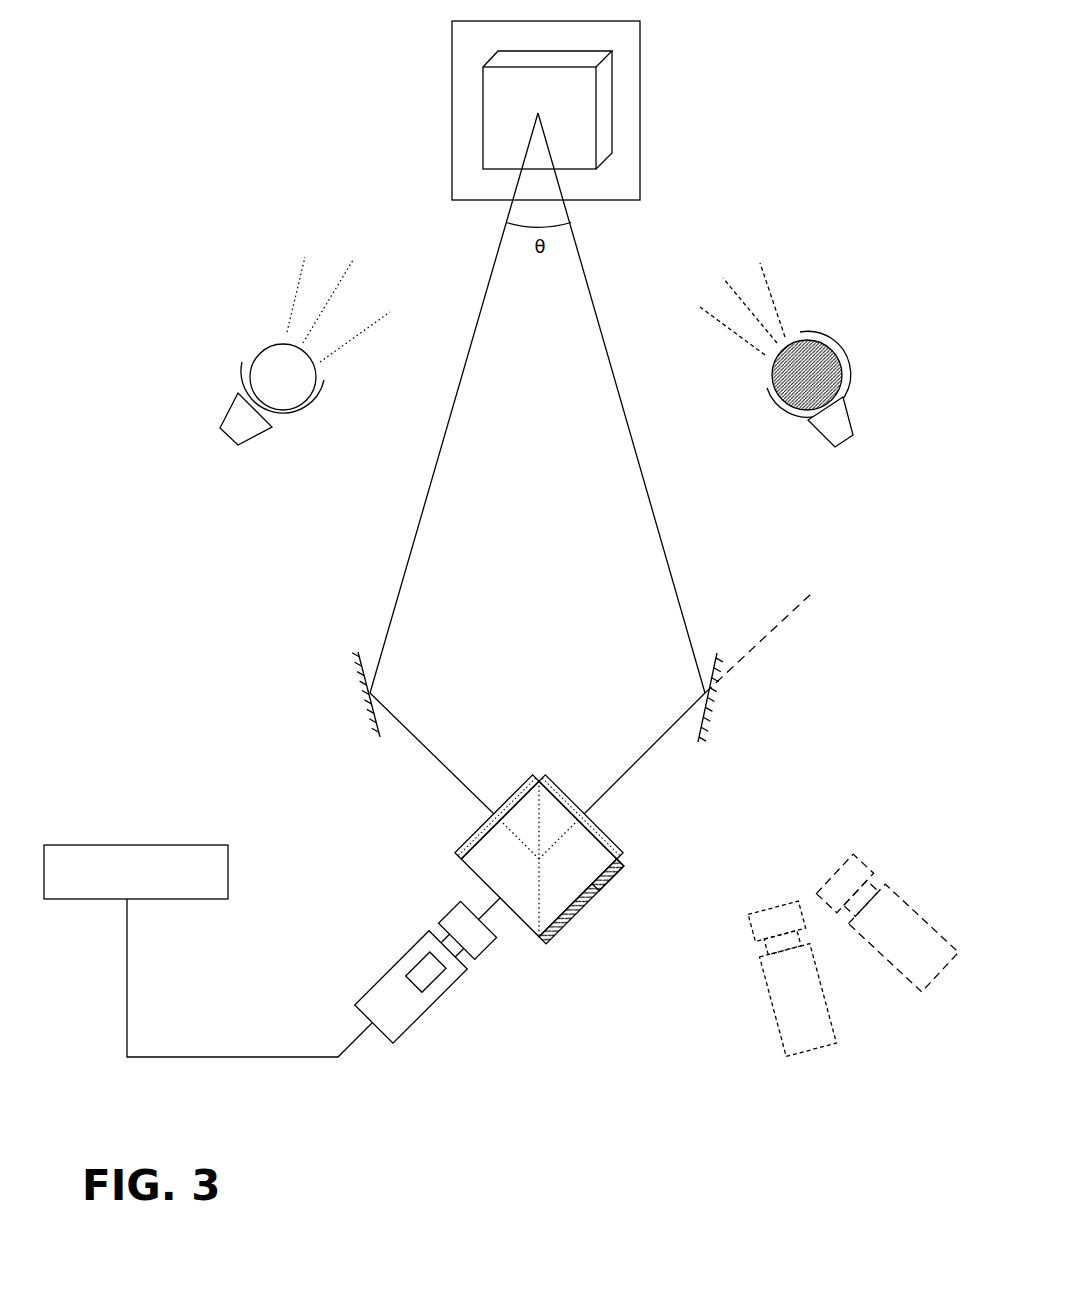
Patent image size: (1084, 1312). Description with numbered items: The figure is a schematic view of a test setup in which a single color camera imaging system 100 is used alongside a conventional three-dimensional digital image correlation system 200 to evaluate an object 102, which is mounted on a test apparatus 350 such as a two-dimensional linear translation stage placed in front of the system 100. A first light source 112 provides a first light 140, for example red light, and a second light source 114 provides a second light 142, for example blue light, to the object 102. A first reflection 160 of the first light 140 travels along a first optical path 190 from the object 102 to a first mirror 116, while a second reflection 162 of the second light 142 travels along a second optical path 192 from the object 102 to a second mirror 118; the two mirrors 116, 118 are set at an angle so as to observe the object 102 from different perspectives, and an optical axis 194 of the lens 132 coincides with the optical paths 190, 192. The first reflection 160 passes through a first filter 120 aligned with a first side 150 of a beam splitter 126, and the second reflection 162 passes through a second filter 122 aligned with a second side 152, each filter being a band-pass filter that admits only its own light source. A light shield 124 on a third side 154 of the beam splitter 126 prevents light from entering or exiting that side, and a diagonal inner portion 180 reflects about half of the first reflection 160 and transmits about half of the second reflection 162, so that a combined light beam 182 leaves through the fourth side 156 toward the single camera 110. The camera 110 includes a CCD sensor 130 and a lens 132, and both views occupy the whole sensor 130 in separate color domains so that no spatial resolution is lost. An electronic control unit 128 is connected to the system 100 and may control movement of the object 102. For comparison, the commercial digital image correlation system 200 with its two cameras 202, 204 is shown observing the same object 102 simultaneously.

The imaging system 100 is at (187, 98).
The object 102 is at (585, 94).
The test apparatus 350 is at (643, 138).
The camera 110 is at (410, 1026).
The first light source 112 is at (228, 380).
The second light source 114 is at (855, 347).
The first mirror 116 is at (358, 655).
The second mirror 118 is at (713, 663).
The first filter 120 is at (503, 795).
The second filter 122 is at (608, 832).
The light shield 124 is at (590, 905).
The beam splitter 126 is at (516, 958).
The electronic control unit 128 is at (95, 845).
The sensor 130 is at (412, 966).
The lens 132 is at (483, 957).
The first light 140 is at (290, 280).
The second light 142 is at (768, 277).
The first side 150 is at (537, 780).
The second side 152 is at (563, 790).
The third side 154 is at (622, 880).
The fourth side 156 is at (530, 933).
The first reflection 160 is at (450, 428).
The second reflection 162 is at (633, 453).
The inner portion 180 is at (542, 826).
The combined light beam 182 is at (485, 903).
The first optical path 190 is at (433, 260).
The second optical path 192 is at (645, 275).
The optical axis 194 is at (787, 615).
The conventional 3D-DIC system 200 is at (870, 785).
The camera 202 is at (910, 990).
The camera 204 is at (808, 1060).